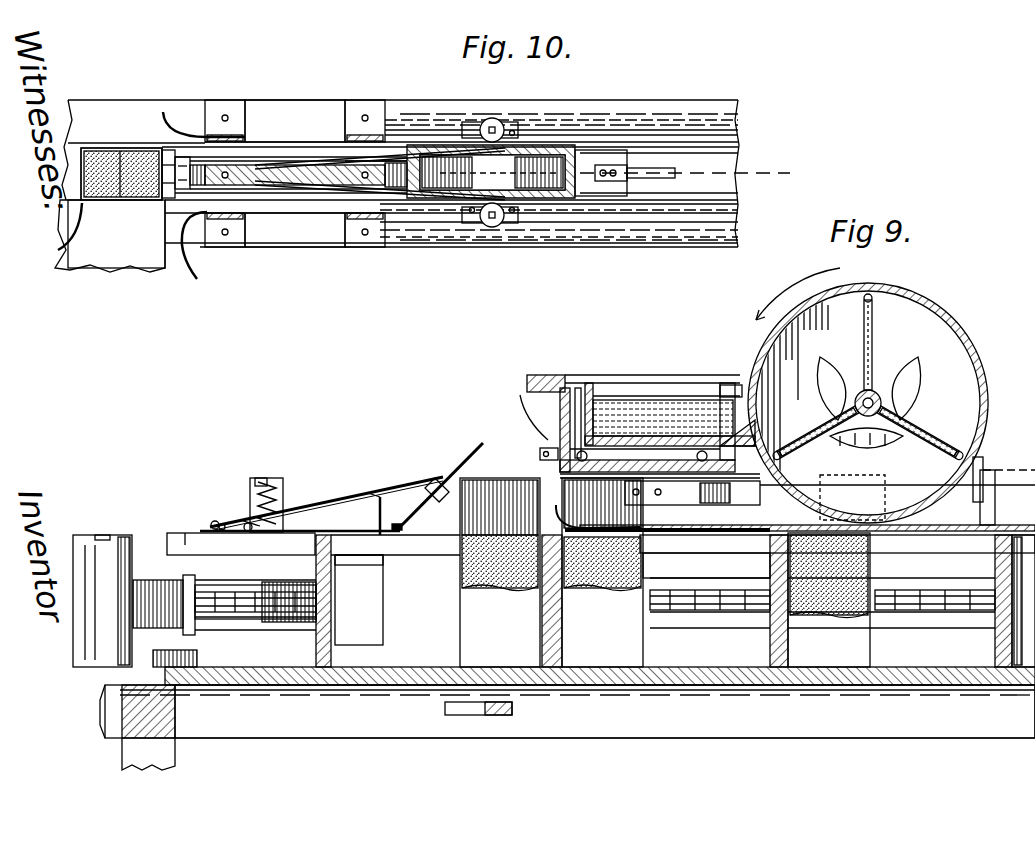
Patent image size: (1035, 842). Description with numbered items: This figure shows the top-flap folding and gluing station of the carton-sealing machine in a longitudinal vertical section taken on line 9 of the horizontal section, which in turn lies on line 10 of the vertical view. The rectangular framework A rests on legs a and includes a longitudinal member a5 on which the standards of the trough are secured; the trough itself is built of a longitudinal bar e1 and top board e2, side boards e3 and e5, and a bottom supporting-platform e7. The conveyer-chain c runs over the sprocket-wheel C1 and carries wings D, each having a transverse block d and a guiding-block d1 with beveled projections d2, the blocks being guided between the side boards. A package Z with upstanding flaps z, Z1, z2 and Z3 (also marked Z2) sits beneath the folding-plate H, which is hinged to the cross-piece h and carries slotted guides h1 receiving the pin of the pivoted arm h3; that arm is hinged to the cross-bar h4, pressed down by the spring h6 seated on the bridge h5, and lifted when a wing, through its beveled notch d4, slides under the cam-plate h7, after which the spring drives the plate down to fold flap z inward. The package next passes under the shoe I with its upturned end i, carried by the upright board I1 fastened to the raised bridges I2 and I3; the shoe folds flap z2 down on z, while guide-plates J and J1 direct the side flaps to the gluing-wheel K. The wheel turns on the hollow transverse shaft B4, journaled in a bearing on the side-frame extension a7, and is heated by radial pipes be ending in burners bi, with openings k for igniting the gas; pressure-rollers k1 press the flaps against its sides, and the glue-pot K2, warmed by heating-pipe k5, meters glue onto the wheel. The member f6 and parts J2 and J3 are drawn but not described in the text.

In FIG. 10, the section line 9 9 is at (687, 174).
In FIG. 9, the section line 10 10 is at (528, 474).
In FIG. 9, the rectangular framework A is at (567, 711).
In FIG. 9, the legs a is at (148, 727).
In FIG. 9, the longitudinal member of the frame a5 is at (605, 711).
In FIG. 9, the side frame upward extension a7 is at (985, 490).
In FIG. 9, the transverse shaft B4 is at (883, 398).
In FIG. 9, the radial pipes be is at (874, 338).
In FIG. 9, the burners bi is at (871, 300).
In FIG. 9, the conveyer-chain c is at (235, 592).
In FIG. 9, the sprocket-wheel C1 is at (258, 619).
In FIG. 9, the wings or paddles D is at (584, 601).
In FIG. 9, the transverse vertical block d is at (95, 667).
In FIG. 9, the longitudinal guiding-block d1 is at (165, 612).
In FIG. 9, the beveled projections d2 is at (359, 567).
In FIG. 9, the beveled notches d4 is at (108, 537).
In FIG. 10, the longitudinal bar e1 is at (738, 222).
In FIG. 10, the top board e2 is at (738, 120).
In FIG. 9, the top board e2 is at (182, 534).
In FIG. 9, the lateral guide / side board e3 is at (595, 585).
In FIG. 9, the lateral guide / side board e5 is at (595, 642).
In FIG. 9, the supporting-platform e7 is at (392, 685).
In FIG. 10, the frame piece f6 is at (116, 234).
In FIG. 9, the folding-plate H is at (440, 472).
In FIG. 9, the cross-piece h is at (388, 537).
In FIG. 9, the slotted guides h1 is at (445, 470).
In FIG. 9, the pivoted arm h3 is at (345, 500).
In FIG. 9, the cross-bar h4 is at (212, 520).
In FIG. 9, the bridge h5 is at (270, 482).
In FIG. 9, the spring h6 is at (283, 490).
In FIG. 9, the cam-plate h7 is at (335, 528).
In FIG. 10, the shoe I is at (600, 196).
In FIG. 9, the shoe I is at (698, 540).
In FIG. 10, the upright board I1 is at (312, 193).
In FIG. 9, the upright board I1 is at (667, 505).
In FIG. 10, the raised bridge I2 is at (240, 140).
In FIG. 9, the raised bridge I2 is at (612, 400).
In FIG. 10, the raised bridge I3 is at (385, 138).
In FIG. 9, the raised bridge I3 is at (738, 385).
In FIG. 10, the upturned end i is at (180, 157).
In FIG. 9, the upturned end i is at (602, 516).
In FIG. 10, the guide-plate J is at (295, 230).
In FIG. 10, the guide-plate J1 is at (295, 121).
In FIG. 9, the guide-plate J1 is at (521, 413).
In FIG. 10, the rod J2 is at (405, 200).
In FIG. 9, the rod J2 is at (745, 490).
In FIG. 10, the tapered rod J3 is at (365, 150).
In FIG. 10, the gluing-wheel K is at (545, 200).
In FIG. 9, the gluing-wheel K is at (990, 403).
In FIG. 9, the glue-pot K2 is at (641, 409).
In FIG. 9, the openings k is at (580, 390).
In FIG. 10, the pressure-roller k1 is at (500, 125).
In FIG. 9, the heating-pipe k5 is at (545, 448).
In FIG. 10, the package Z is at (105, 202).
In FIG. 9, the package Z is at (665, 572).
In FIG. 10, the flap z is at (81, 183).
In FIG. 9, the flap z is at (460, 508).
In FIG. 10, the flap Z1 is at (162, 180).
In FIG. 10, the flap Z2 is at (125, 160).
In FIG. 9, the flap z2 is at (548, 503).
In FIG. 10, the flap Z3 is at (97, 150).
In FIG. 9, the flap Z3 is at (548, 470).